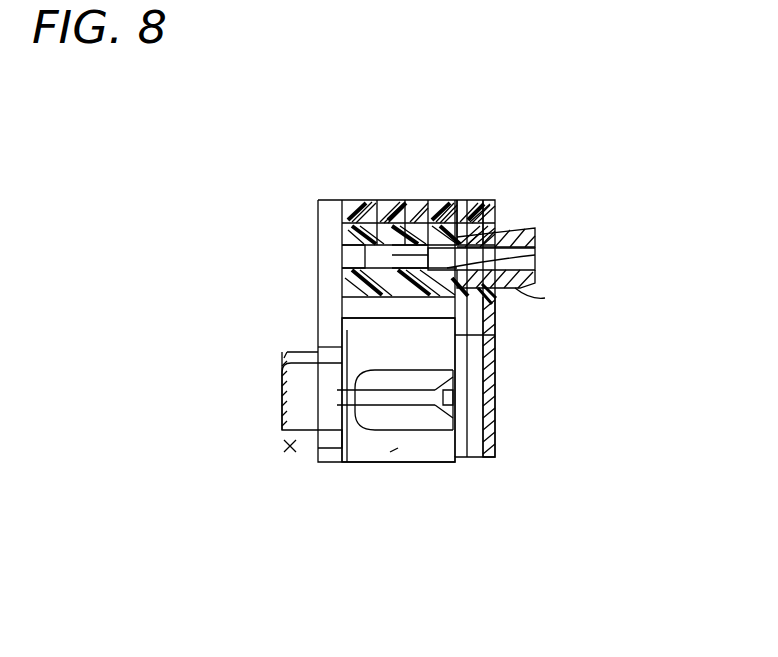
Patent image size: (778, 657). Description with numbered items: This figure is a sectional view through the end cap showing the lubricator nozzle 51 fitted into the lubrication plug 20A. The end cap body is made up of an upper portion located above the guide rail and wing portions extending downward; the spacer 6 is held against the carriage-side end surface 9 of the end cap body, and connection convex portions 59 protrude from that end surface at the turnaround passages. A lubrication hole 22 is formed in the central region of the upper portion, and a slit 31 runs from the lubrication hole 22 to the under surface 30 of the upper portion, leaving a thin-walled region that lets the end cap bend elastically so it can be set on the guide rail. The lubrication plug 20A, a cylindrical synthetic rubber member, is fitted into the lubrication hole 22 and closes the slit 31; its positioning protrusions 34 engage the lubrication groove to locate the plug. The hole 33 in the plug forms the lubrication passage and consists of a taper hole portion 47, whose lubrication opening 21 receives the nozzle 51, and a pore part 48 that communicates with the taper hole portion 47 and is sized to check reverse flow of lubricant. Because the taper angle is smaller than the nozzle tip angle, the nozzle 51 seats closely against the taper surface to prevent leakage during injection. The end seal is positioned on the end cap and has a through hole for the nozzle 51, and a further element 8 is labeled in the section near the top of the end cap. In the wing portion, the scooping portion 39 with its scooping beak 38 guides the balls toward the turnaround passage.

The spacer 6 is at (297, 197).
The carriage-side end surface 9 is at (320, 247).
The hole 33 is at (363, 197).
The lubrication plug 20A is at (390, 197).
The pore part 48 is at (410, 197).
The lubrication hole 22 is at (457, 197).
The valve seat block 8 is at (477, 197).
The lubrication opening 21 is at (537, 232).
The taper hole portion 47 is at (535, 256).
The nozzle 51 is at (527, 287).
The positioning protrusions 34 is at (350, 263).
The under surface 30 is at (395, 316).
The slit 31 is at (422, 324).
The connection convex portion 59 is at (297, 446).
The scooping beak 38 is at (347, 465).
The scooping portion 39 is at (405, 419).